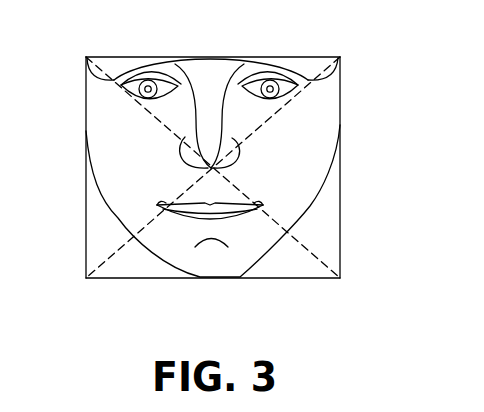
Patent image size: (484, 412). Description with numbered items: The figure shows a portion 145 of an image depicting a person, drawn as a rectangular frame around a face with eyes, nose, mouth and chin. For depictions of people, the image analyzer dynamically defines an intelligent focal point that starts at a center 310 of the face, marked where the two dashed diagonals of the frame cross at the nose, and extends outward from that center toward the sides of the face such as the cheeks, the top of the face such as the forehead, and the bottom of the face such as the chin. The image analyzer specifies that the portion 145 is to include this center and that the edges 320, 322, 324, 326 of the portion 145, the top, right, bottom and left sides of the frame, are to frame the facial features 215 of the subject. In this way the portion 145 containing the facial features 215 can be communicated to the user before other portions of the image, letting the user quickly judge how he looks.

The portion 145 is at (216, 167).
The facial features 215 is at (118, 218).
The center 310 is at (218, 170).
The edge 320 is at (292, 58).
The edge 322 is at (340, 214).
The edge 324 is at (292, 278).
The edge 326 is at (85, 177).